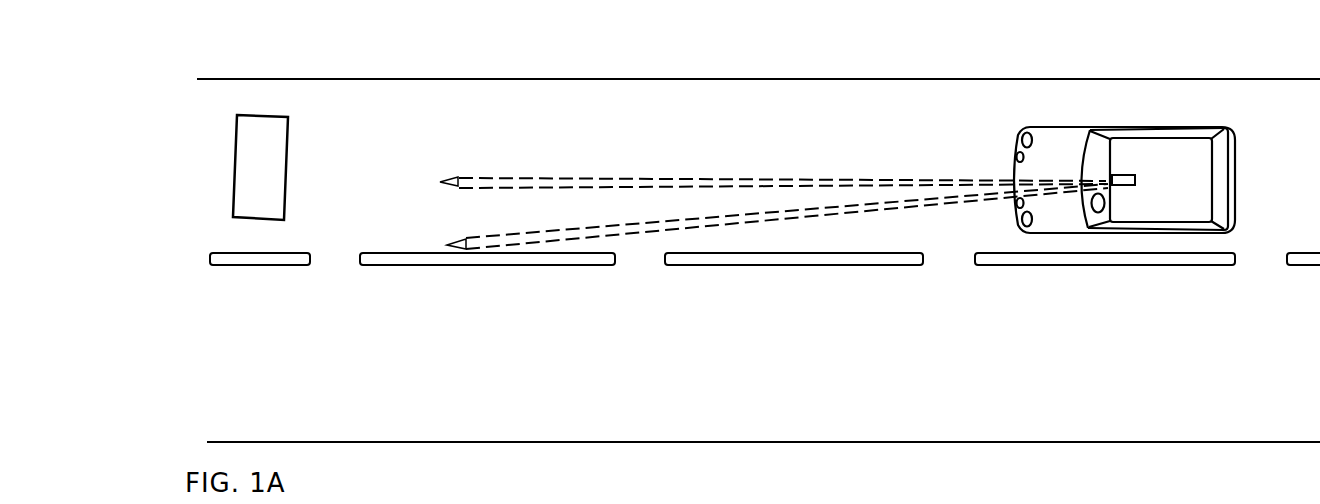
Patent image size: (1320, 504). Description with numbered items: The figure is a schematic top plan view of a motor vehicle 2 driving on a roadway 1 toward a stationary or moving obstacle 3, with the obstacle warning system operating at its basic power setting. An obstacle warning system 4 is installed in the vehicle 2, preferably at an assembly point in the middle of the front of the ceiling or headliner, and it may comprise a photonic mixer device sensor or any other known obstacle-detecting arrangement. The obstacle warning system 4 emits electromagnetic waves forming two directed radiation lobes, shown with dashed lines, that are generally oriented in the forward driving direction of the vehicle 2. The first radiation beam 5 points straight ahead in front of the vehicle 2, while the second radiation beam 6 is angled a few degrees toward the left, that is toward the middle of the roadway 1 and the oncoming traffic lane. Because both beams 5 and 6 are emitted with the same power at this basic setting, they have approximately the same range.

The roadway 1 is at (756, 130).
The motor vehicle 2 is at (1237, 140).
The obstacle 3 is at (240, 137).
The obstacle warning system 4 is at (1123, 172).
The first radiation beam 5 is at (533, 177).
The second radiation beam 6 is at (641, 236).